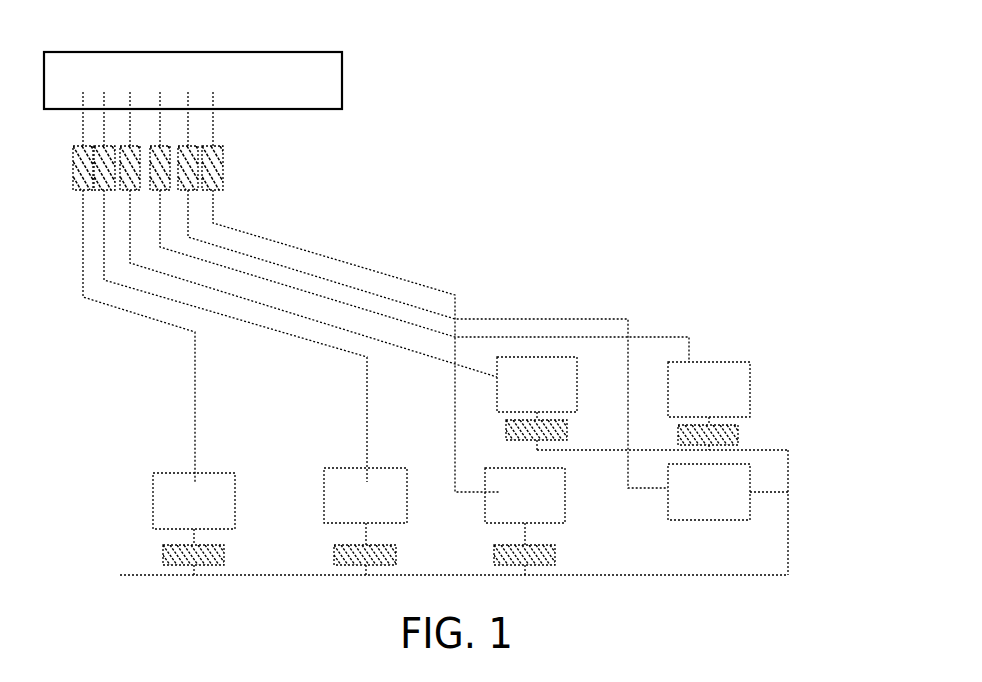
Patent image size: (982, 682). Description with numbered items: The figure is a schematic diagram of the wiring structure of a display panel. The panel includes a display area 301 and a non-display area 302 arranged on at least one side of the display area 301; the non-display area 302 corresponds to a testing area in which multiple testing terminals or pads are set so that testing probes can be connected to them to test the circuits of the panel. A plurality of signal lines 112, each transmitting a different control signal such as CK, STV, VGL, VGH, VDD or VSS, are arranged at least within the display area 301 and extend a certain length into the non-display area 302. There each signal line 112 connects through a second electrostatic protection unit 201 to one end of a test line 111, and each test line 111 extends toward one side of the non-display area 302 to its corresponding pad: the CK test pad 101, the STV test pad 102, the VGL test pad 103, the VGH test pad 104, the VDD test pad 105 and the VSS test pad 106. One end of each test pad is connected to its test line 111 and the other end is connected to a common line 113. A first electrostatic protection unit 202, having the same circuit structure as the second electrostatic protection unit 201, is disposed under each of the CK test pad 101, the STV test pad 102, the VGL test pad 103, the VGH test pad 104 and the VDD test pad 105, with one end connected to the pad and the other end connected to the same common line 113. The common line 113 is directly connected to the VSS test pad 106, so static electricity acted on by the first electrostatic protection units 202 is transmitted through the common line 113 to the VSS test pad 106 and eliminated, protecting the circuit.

The display area 301 is at (318, 80).
The non-display area 302 is at (384, 192).
The signal lines 112 is at (104, 125).
The test line 111 is at (270, 242).
The common line 113 is at (787, 538).
The second electrostatic protection unit 201 is at (224, 170).
The first electrostatic protection unit 202 is at (739, 433).
The CK test pad 101 is at (194, 501).
The STV test pad 102 is at (365, 495).
The VGL test pad 103 is at (525, 495).
The VGH test pad 104 is at (537, 384).
The VDD test pad 105 is at (709, 389).
The VSS test pad 106 is at (709, 492).